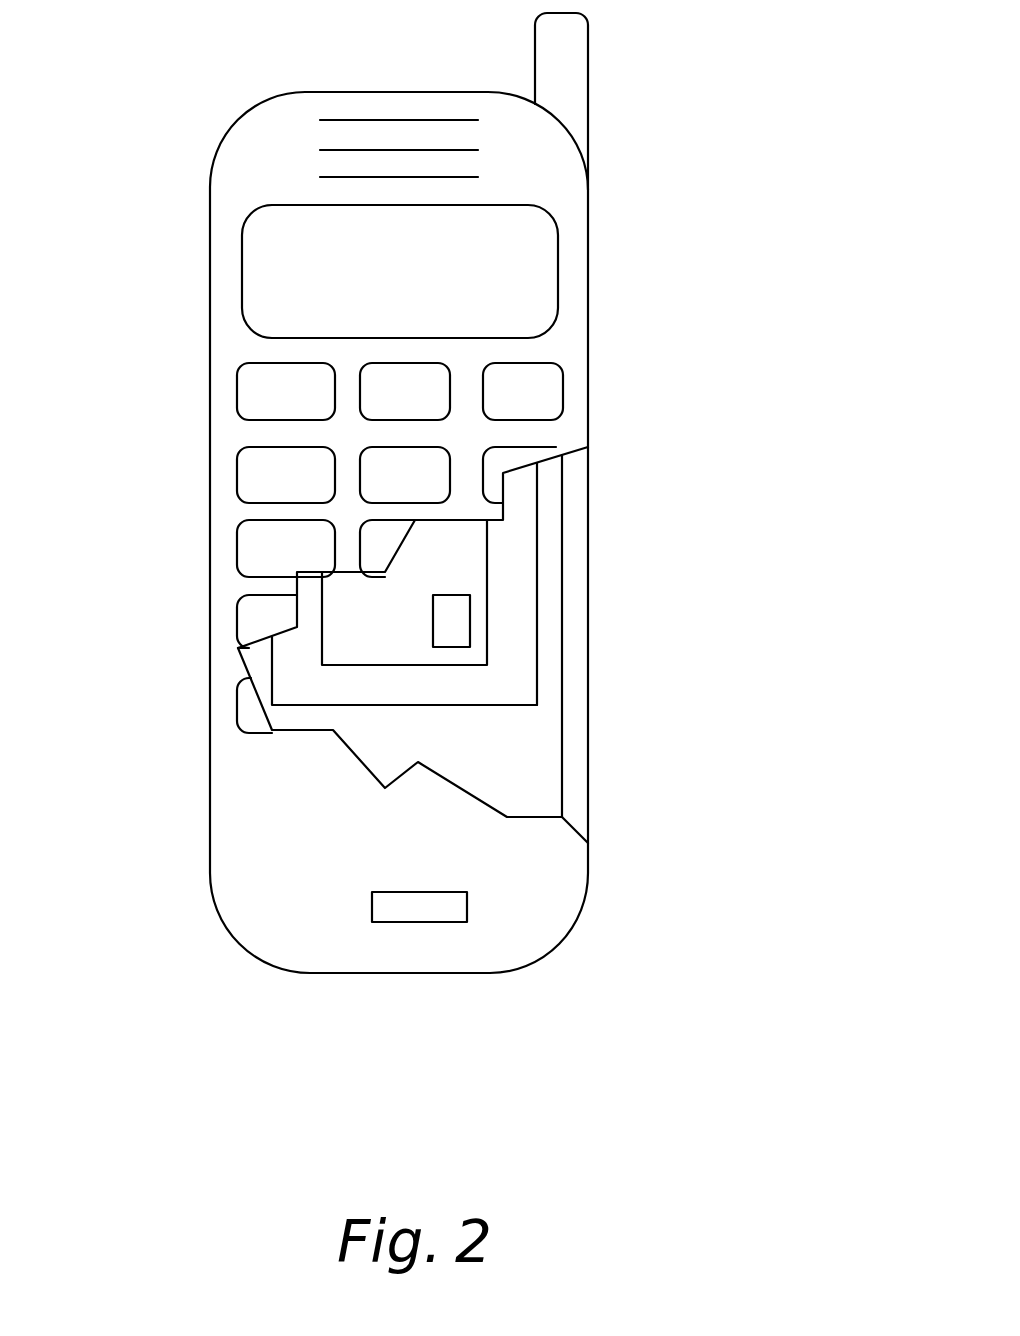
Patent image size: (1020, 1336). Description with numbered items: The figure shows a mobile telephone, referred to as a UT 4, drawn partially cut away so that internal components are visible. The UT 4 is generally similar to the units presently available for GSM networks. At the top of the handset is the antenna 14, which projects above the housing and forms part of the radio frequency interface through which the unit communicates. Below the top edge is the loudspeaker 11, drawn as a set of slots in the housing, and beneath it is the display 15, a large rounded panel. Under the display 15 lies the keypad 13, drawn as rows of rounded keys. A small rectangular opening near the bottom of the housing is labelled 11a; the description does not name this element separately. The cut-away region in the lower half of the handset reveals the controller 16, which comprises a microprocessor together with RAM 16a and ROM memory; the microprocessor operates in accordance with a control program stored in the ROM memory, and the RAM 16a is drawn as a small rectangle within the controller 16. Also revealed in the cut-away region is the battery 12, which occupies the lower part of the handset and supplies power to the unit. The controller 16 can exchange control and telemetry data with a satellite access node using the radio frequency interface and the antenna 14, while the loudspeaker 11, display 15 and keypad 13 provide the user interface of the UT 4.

The UT 4 is at (662, 473).
The loudspeaker 11 is at (447, 152).
The microphone 11a is at (428, 910).
The battery 12 is at (522, 763).
The keypad 13 is at (230, 513).
The antenna 14 is at (572, 65).
The display 15 is at (525, 280).
The controller 16 is at (463, 557).
The RAM 16a is at (455, 623).